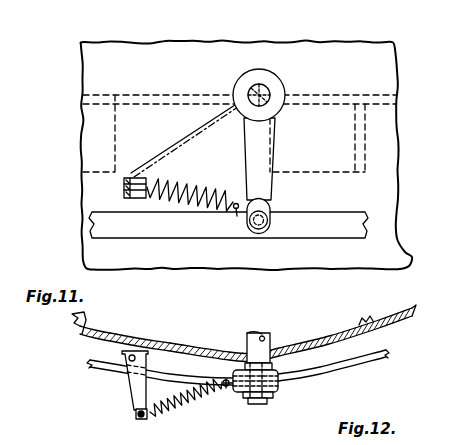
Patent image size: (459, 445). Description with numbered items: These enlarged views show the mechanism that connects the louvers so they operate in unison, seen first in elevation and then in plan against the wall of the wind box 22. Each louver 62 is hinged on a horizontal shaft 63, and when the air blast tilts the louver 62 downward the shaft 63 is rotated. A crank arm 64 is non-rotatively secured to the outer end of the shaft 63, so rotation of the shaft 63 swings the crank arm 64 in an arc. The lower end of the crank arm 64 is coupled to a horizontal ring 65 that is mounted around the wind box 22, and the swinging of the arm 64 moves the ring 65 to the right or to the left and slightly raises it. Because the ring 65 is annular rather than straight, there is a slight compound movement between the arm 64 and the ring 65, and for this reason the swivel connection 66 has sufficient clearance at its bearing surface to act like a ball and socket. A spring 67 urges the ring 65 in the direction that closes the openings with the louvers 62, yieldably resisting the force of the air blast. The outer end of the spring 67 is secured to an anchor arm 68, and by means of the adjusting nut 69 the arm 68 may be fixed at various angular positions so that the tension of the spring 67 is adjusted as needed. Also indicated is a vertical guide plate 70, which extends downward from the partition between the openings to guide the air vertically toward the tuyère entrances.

In FIG. 11, the wind box 22 is at (367, 47).
In FIG. 12, the wind box 22 is at (404, 322).
In FIG. 11, the louver 62 is at (152, 100).
In FIG. 11, the shaft 63 is at (263, 91).
In FIG. 12, the shaft 63 is at (272, 338).
In FIG. 11, the crank arm 64 is at (267, 183).
In FIG. 12, the crank arm 64 is at (278, 394).
In FIG. 11, the ring 65 is at (313, 236).
In FIG. 12, the ring 65 is at (353, 366).
In FIG. 11, the swivel connection 66 is at (253, 240).
In FIG. 11, the spring 67 is at (217, 196).
In FIG. 12, the spring 67 is at (191, 404).
In FIG. 11, the anchor arm 68 is at (123, 183).
In FIG. 12, the anchor arm 68 is at (136, 415).
In FIG. 12, the adjusting nut 69 is at (127, 358).
In FIG. 11, the vertical guide plate 70 is at (361, 164).